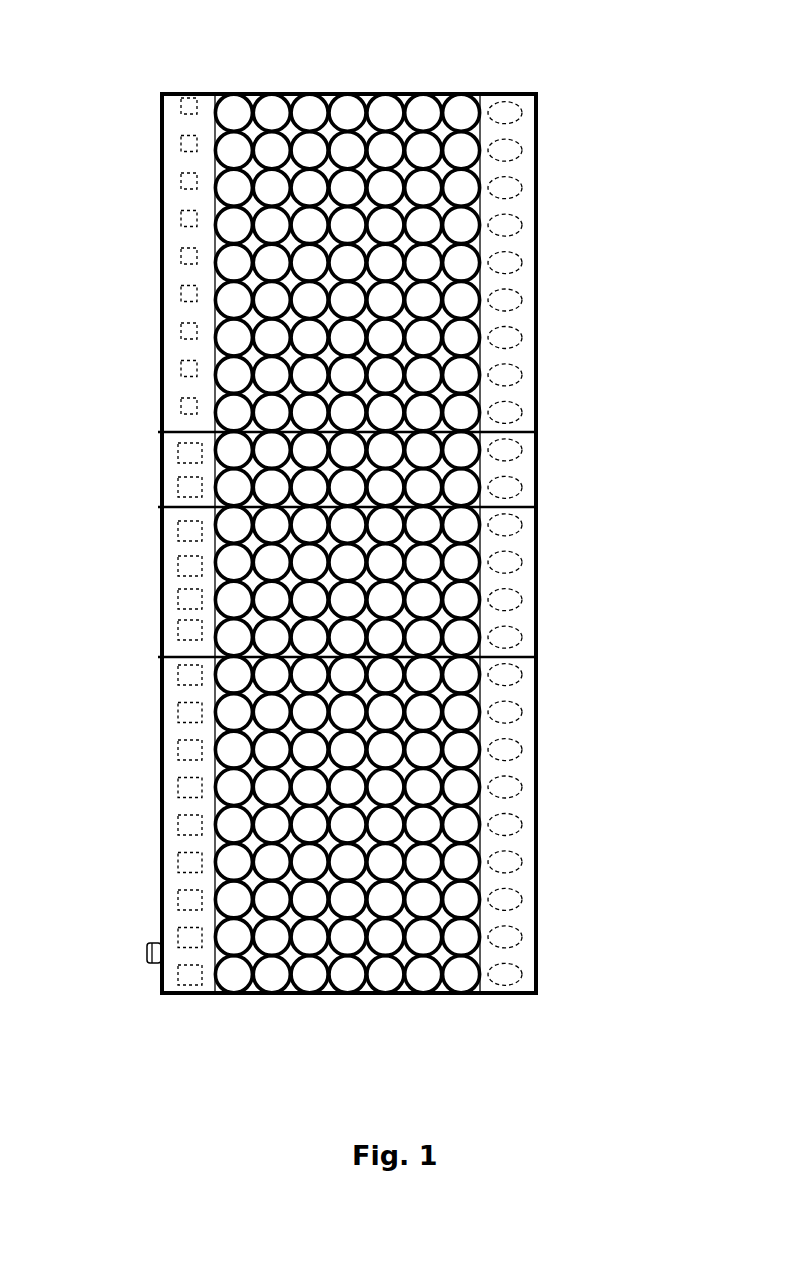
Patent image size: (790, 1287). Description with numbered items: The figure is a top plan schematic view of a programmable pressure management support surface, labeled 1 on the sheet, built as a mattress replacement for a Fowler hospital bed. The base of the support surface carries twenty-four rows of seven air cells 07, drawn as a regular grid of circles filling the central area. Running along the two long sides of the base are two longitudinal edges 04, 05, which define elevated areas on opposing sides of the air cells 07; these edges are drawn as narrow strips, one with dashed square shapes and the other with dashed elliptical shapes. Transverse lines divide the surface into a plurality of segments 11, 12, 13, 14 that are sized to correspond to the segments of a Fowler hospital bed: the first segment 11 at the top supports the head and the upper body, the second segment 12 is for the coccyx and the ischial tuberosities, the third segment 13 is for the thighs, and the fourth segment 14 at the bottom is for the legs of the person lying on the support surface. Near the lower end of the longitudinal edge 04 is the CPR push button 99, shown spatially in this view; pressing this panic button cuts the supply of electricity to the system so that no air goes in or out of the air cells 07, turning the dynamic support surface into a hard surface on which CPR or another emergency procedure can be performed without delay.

The battery pack 1 is at (343, 543).
The longitudinal edge 04 is at (195, 94).
The longitudinal edge 05 is at (498, 94).
The air cells 07 is at (232, 377).
The first segment 11 is at (538, 235).
The second segment 12 is at (538, 479).
The third segment 13 is at (538, 600).
The fourth segment 14 is at (538, 780).
The CPR push button 99 is at (142, 943).